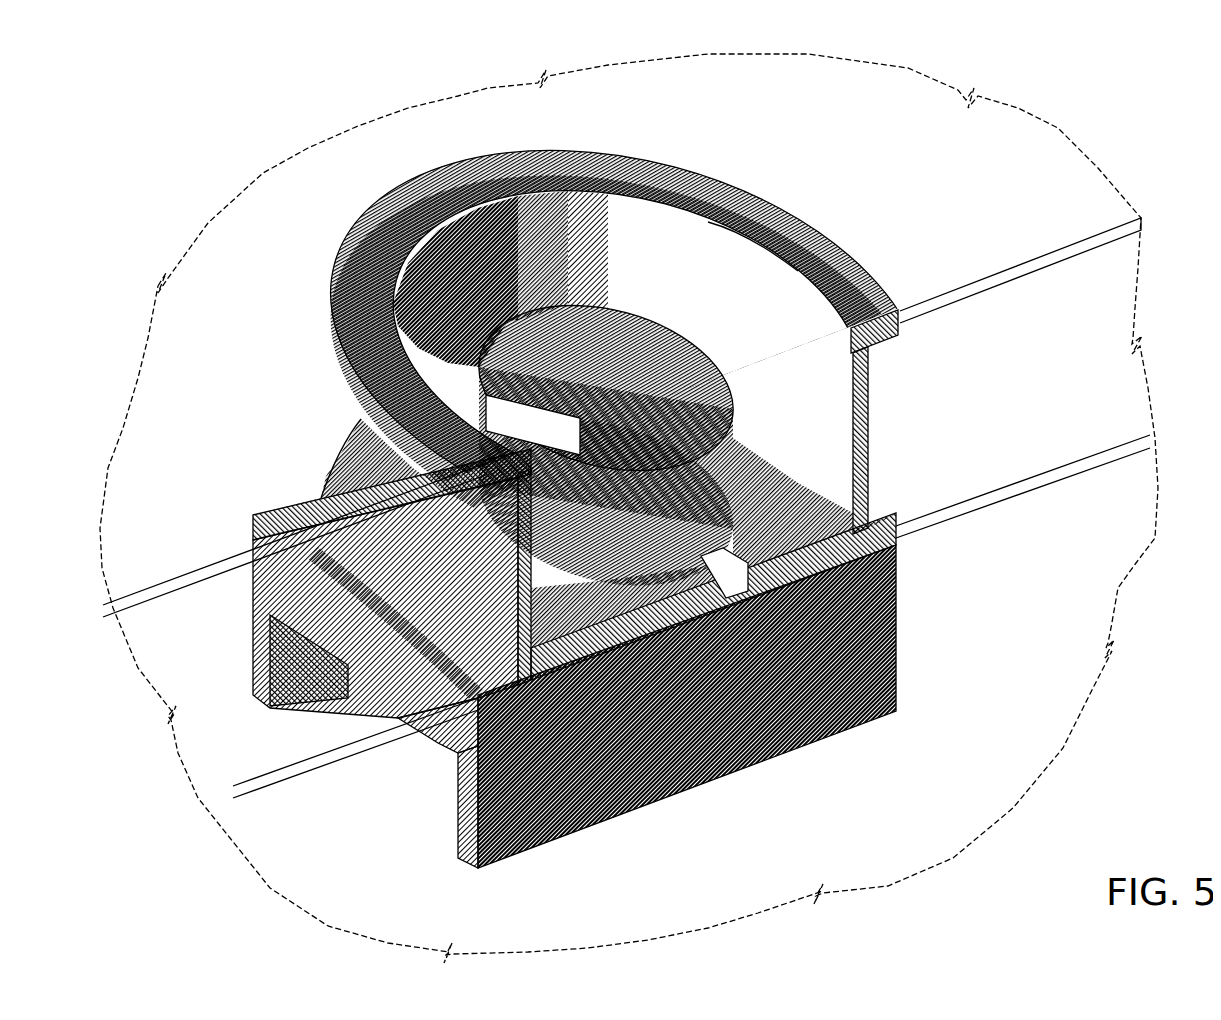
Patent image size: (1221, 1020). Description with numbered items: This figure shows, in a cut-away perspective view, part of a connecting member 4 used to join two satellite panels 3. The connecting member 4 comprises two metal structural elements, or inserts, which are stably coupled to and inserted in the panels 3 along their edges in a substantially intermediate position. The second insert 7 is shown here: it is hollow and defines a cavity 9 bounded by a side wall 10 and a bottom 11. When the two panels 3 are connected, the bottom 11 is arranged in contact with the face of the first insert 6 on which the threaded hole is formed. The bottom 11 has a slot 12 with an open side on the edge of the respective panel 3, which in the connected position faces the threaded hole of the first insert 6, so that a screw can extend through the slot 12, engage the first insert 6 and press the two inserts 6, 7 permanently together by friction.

The panel 3 is at (1050, 198).
The connecting member 4 is at (611, 493).
The first insert 6 is at (514, 794).
The second insert 7 is at (795, 235).
The cavity 9 is at (590, 238).
The side wall 10 is at (735, 288).
The bottom 11 is at (860, 442).
The slot 12 is at (682, 596).